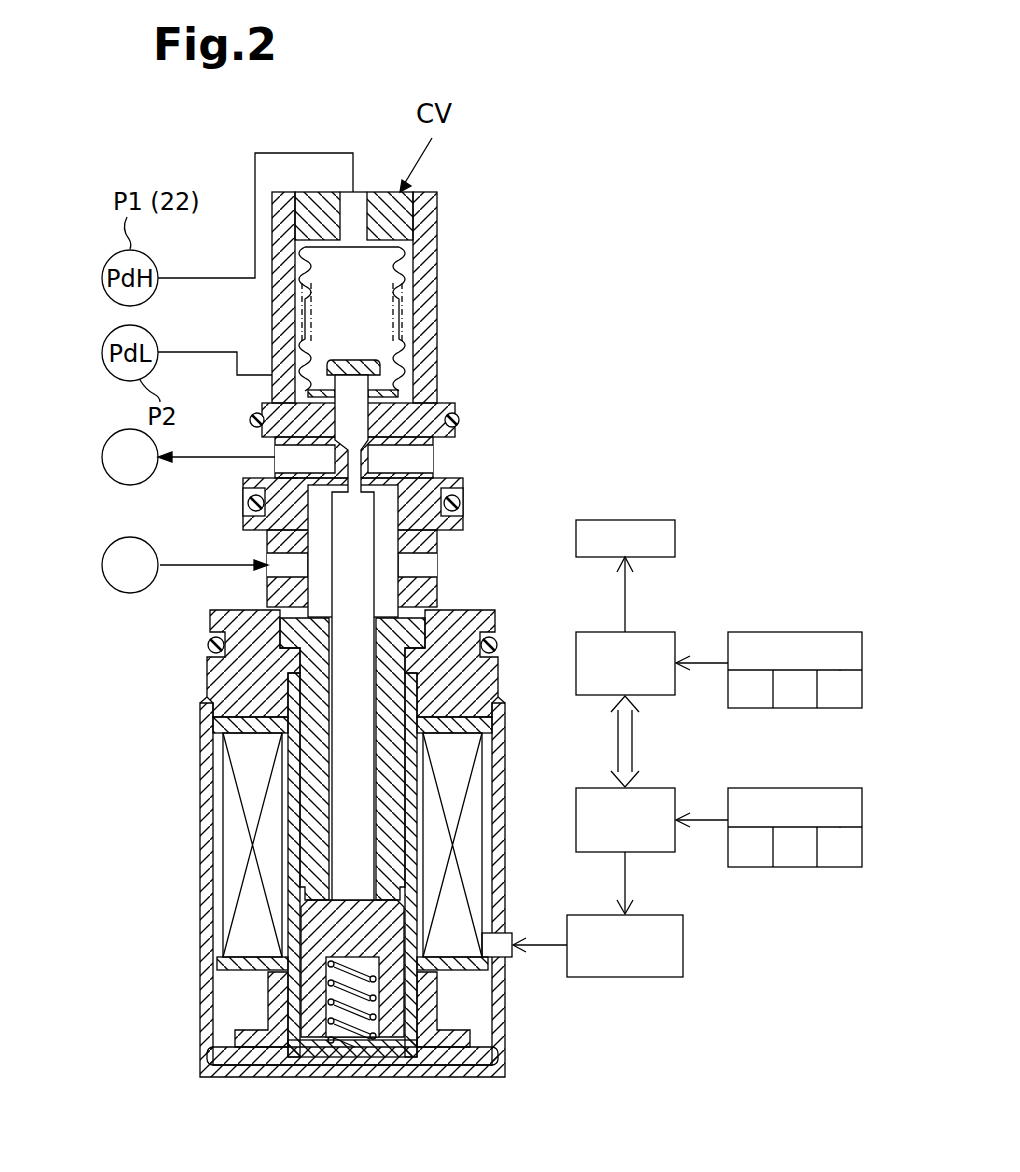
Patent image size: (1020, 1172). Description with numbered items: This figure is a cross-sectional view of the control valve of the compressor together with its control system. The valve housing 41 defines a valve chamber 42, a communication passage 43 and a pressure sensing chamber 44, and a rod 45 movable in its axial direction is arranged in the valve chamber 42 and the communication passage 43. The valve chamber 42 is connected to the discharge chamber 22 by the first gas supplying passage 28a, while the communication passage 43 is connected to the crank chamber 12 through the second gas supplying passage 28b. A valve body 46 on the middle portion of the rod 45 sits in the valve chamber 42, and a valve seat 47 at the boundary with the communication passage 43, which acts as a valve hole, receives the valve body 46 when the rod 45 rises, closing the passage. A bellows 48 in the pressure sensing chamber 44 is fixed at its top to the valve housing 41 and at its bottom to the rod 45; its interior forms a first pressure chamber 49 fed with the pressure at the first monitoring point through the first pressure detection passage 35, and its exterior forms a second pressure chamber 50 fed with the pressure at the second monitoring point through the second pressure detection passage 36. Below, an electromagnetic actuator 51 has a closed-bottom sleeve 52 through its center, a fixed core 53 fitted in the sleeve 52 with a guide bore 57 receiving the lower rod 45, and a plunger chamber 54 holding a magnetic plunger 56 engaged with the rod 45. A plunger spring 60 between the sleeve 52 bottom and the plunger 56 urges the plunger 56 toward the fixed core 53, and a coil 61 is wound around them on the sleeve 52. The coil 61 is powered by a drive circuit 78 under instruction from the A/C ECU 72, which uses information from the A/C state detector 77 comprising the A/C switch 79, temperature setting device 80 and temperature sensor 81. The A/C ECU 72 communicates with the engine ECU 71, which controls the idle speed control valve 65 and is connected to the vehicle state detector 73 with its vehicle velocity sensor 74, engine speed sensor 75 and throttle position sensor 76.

The crank chamber 12 is at (130, 457).
The discharge chamber 22 is at (130, 565).
The first gas supplying passage 28a is at (180, 572).
The second gas supplying passage 28b is at (183, 463).
The first pressure detection passage 35 is at (184, 276).
The second pressure detection passage 36 is at (179, 351).
The valve housing 41 is at (465, 490).
The valve chamber 42 is at (412, 560).
The communication passage 43 is at (372, 466).
The pressure sensing chamber 44 is at (410, 290).
The rod 45 is at (362, 598).
The valve body 46 is at (392, 545).
The valve seat 47 is at (290, 477).
The bellows 48 is at (410, 365).
The first pressure chamber 49 is at (354, 321).
The second pressure chamber 50 is at (308, 392).
The electromagnetic actuator 51 is at (506, 745).
The sleeve 52 is at (422, 698).
The fixed core 53 is at (420, 632).
The plunger chamber 54 is at (400, 905).
The plunger 56 is at (406, 922).
The guide bore 57 is at (335, 722).
The plunger spring 60 is at (338, 1032).
The coil 61 is at (475, 795).
The idle speed control valve 65 is at (677, 540).
The engine ECU 71 is at (657, 630).
The A/C ECU 72 is at (657, 787).
The vehicle state detector 73 is at (845, 630).
The vehicle velocity sensor 74 is at (753, 689).
The engine speed sensor 75 is at (797, 689).
The throttle position sensor 76 is at (839, 688).
The A/C state detector 77 is at (845, 787).
The drive circuit 78 is at (685, 946).
The A/C switch 79 is at (753, 847).
The temperature setting device 80 is at (797, 847).
The temperature sensor 81 is at (839, 846).